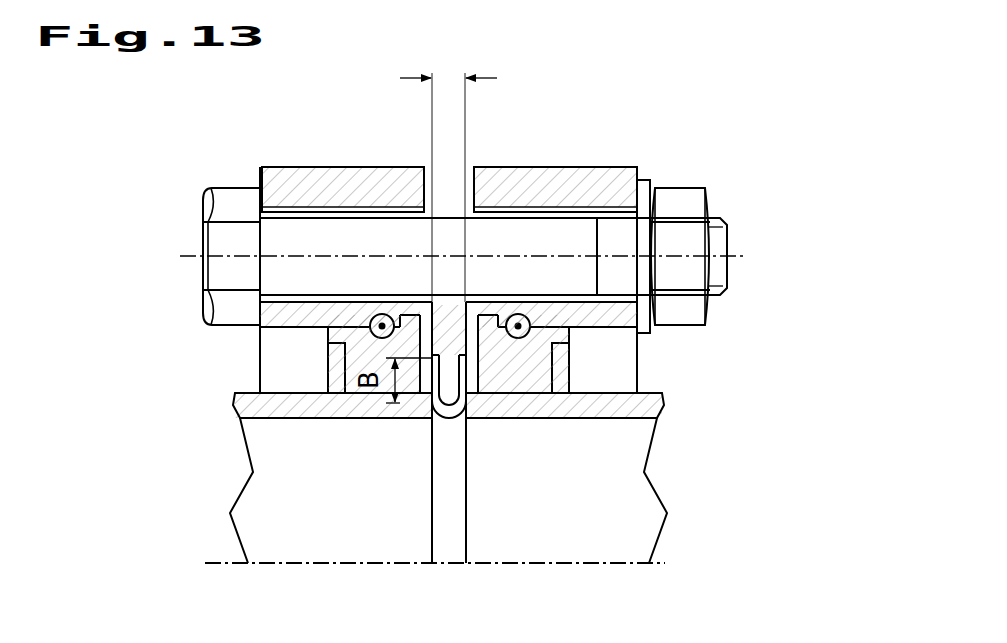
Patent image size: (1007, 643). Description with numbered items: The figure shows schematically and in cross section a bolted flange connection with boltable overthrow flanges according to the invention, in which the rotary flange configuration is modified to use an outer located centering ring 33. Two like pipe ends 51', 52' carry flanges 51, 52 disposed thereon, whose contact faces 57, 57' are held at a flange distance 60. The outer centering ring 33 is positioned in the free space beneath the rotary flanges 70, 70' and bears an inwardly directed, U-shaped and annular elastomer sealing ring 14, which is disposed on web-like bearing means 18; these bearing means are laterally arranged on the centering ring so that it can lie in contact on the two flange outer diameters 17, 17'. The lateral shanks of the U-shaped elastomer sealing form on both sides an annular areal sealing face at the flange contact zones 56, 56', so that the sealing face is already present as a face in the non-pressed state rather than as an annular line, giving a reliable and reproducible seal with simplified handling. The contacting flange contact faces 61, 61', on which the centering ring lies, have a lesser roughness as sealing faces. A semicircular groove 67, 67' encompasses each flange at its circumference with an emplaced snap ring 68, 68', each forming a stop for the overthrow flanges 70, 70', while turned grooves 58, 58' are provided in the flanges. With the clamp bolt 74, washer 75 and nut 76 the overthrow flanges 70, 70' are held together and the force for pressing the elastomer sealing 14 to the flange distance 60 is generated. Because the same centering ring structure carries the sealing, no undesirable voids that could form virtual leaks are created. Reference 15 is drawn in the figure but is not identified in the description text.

The U-shaped elastomer sealing ring 14 is at (431, 421).
The plane / base line 15 is at (606, 567).
The flange outer diameter 17 is at (283, 209).
The flange outer diameter 17' is at (510, 209).
The bearing means 18 is at (448, 402).
The outer centering ring 33 is at (448, 333).
The flange 51 is at (268, 387).
The pipe end 51' is at (187, 405).
The flange 52 is at (665, 424).
The pipe end 52' is at (646, 367).
The flange contact zone 56 is at (265, 350).
The flange contact zone 56' is at (648, 355).
The contact face 57 is at (247, 490).
The contact face 57' is at (658, 490).
The turned groove 58 is at (224, 368).
The turned groove 58' is at (689, 368).
The flange distance 60 is at (427, 62).
The flange contact face 61 is at (268, 295).
The flange contact face 61' is at (646, 309).
The semicircular groove 67 is at (249, 269).
The semicircular groove 67' is at (666, 283).
The snap ring 68 is at (343, 205).
The snap ring 68' is at (555, 206).
The overthrow flange 70 is at (270, 143).
The overthrow flange 70' is at (630, 146).
The clamp bolt 74 is at (237, 207).
The washer 75 is at (645, 195).
The nut 76 is at (687, 203).